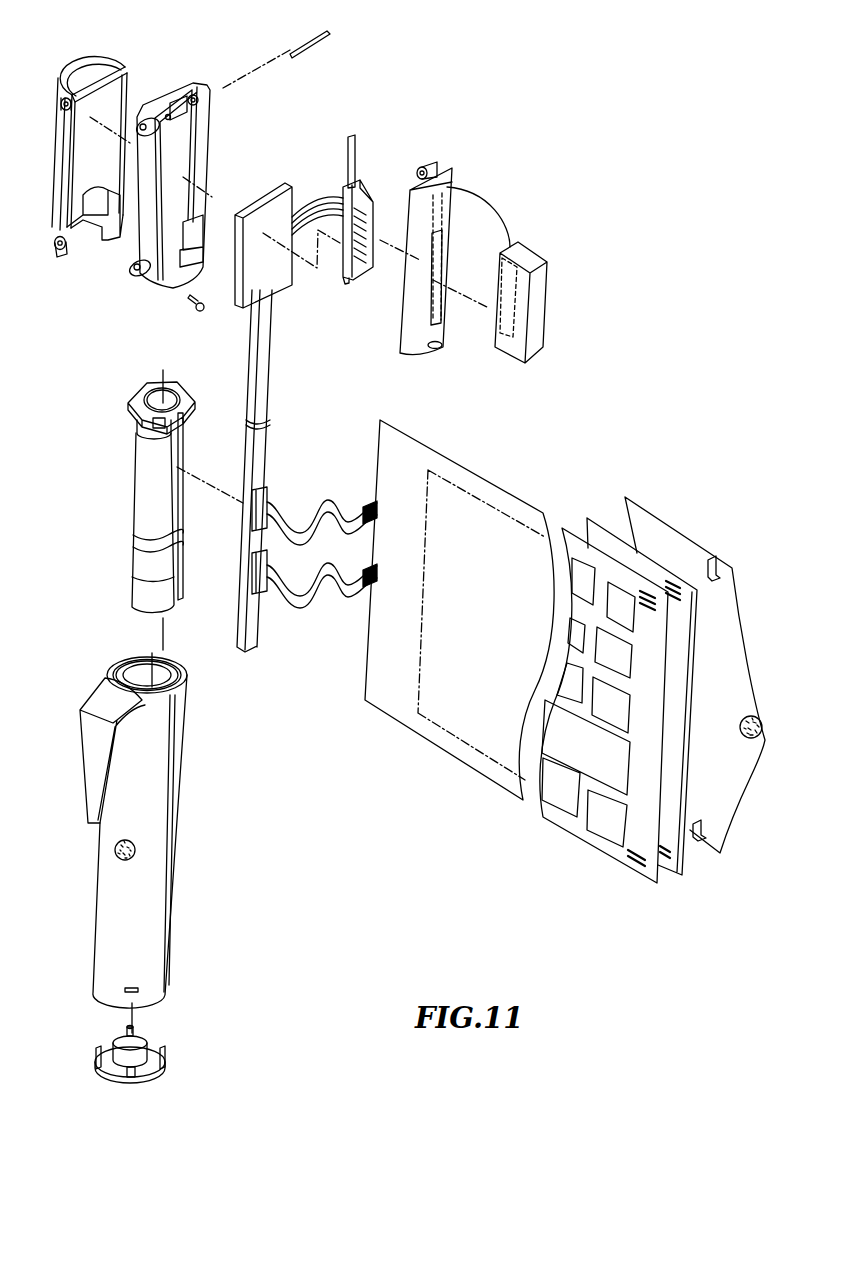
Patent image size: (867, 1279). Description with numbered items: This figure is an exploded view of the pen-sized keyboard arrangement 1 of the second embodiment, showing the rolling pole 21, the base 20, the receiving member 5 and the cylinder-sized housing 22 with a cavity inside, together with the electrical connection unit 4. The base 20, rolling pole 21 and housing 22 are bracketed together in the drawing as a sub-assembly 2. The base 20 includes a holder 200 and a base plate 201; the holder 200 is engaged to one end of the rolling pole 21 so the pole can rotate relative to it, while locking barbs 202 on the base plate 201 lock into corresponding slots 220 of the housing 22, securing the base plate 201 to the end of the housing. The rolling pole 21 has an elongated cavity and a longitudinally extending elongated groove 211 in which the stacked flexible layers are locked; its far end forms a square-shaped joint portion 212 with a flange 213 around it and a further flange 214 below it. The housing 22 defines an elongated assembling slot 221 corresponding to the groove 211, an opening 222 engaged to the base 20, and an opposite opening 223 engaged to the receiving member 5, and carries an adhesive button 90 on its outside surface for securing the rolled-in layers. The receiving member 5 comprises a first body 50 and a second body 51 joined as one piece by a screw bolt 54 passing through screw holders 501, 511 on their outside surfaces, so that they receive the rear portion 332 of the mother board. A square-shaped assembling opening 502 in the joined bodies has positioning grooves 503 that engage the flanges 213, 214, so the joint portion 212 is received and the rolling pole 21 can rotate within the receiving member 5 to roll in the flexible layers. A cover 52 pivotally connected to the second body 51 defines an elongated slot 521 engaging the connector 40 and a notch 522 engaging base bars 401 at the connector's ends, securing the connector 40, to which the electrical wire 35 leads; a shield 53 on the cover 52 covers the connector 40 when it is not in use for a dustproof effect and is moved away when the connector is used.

The pen-sized keyboard arrangement 1 is at (644, 134).
The cylinder assembly 2 is at (30, 966).
The electrical connection unit 4 is at (430, 125).
The receiving member 5 is at (183, 67).
The base 20 is at (228, 1000).
The rolling pole 21 is at (148, 490).
The cylinder-sized housing 22 is at (97, 902).
The electrical wire 35 is at (327, 207).
The connector 40 is at (373, 220).
The first body 50 is at (60, 214).
The second body 51 is at (212, 167).
The cover 52 is at (447, 187).
The shield 53 is at (538, 300).
The screw bolt 54 is at (190, 309).
The adhesive button 90 is at (115, 851).
The holder 200 is at (140, 1044).
The base plate 201 is at (153, 1082).
The locking barbs 202 is at (167, 1055).
The elongated groove 211 is at (143, 577).
The joint portion 212 is at (143, 392).
The flange 213 is at (140, 420).
The flange 214 is at (147, 437).
The slots 220 is at (132, 988).
The elongated assembling slot 221 is at (163, 925).
The opening 222 is at (102, 998).
The opening 223 is at (140, 670).
The rear portion of the mother board 332 is at (285, 203).
The base bars 401 is at (357, 160).
The screw holder 501 is at (60, 103).
The assembling opening 502 is at (75, 245).
The positioning grooves 503 is at (103, 233).
The screw holder 511 is at (151, 124).
The elongated slot 521 is at (433, 300).
The notch 522 is at (443, 335).